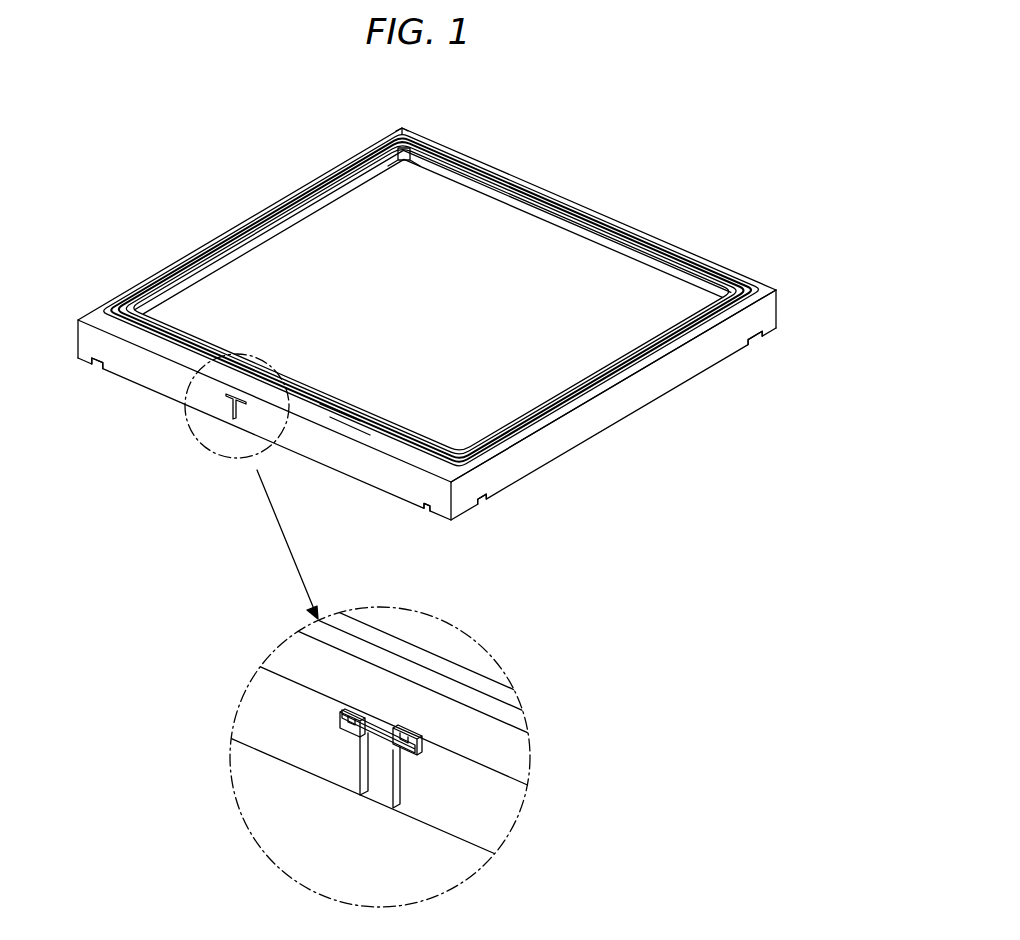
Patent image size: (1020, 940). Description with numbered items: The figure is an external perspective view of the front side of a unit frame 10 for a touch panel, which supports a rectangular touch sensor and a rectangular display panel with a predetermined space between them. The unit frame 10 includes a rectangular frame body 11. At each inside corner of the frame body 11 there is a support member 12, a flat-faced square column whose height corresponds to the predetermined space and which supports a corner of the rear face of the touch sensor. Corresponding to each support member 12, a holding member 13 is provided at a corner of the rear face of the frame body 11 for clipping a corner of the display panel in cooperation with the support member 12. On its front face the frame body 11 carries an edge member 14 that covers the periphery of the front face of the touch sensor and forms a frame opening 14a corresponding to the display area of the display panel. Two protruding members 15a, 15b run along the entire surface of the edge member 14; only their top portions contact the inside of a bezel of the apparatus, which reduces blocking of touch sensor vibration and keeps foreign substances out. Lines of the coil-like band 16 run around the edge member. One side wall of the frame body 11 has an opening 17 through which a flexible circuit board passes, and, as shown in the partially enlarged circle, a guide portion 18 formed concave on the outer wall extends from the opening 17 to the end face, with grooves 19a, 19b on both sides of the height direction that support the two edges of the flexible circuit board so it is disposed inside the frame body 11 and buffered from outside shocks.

The unit frame for touch panel 10 is at (603, 197).
The frame body 11 is at (166, 378).
The support member 12 is at (401, 142).
The holding member 13 is at (98, 362).
The edge member 14 is at (412, 462).
The frame opening 14a is at (194, 340).
The protruding member 15a is at (349, 425).
The protruding member 15b is at (344, 412).
The antenna coil 16 is at (296, 209).
The opening 17 is at (388, 727).
The guide portion 18 is at (234, 422).
The groove 19a is at (358, 706).
The groove 19b is at (408, 733).